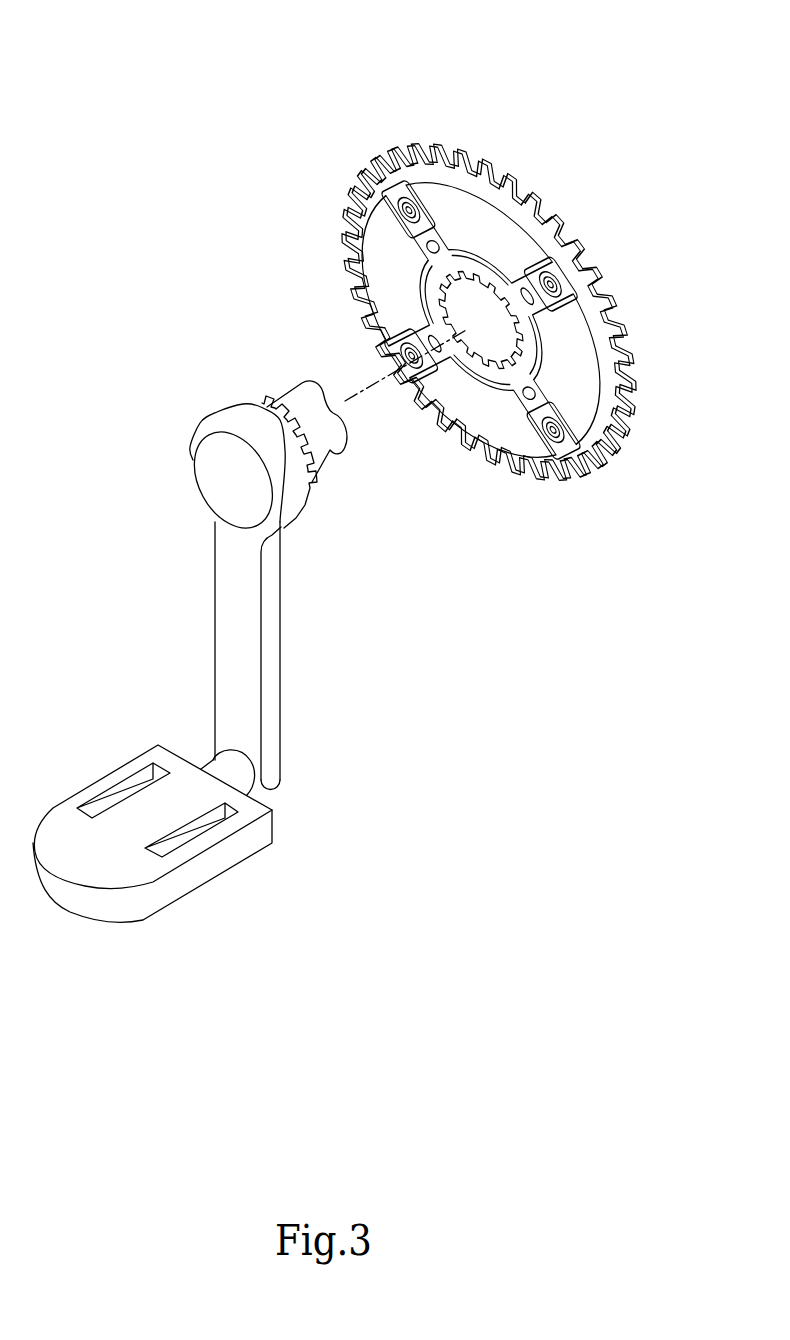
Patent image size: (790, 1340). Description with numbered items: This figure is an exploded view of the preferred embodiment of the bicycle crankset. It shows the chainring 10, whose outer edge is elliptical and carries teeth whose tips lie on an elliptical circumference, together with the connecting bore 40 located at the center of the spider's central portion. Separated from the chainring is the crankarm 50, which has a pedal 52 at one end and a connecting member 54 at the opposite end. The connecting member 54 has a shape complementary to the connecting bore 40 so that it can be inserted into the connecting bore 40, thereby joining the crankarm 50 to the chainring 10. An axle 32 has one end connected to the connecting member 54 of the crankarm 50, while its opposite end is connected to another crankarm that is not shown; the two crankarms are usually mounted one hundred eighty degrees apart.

The chainring 10 is at (366, 165).
The connecting bore 40 is at (470, 268).
The axle 32 is at (300, 393).
The connecting member 54 is at (273, 407).
The crankarm 50 is at (270, 643).
The pedal 52 is at (232, 853).